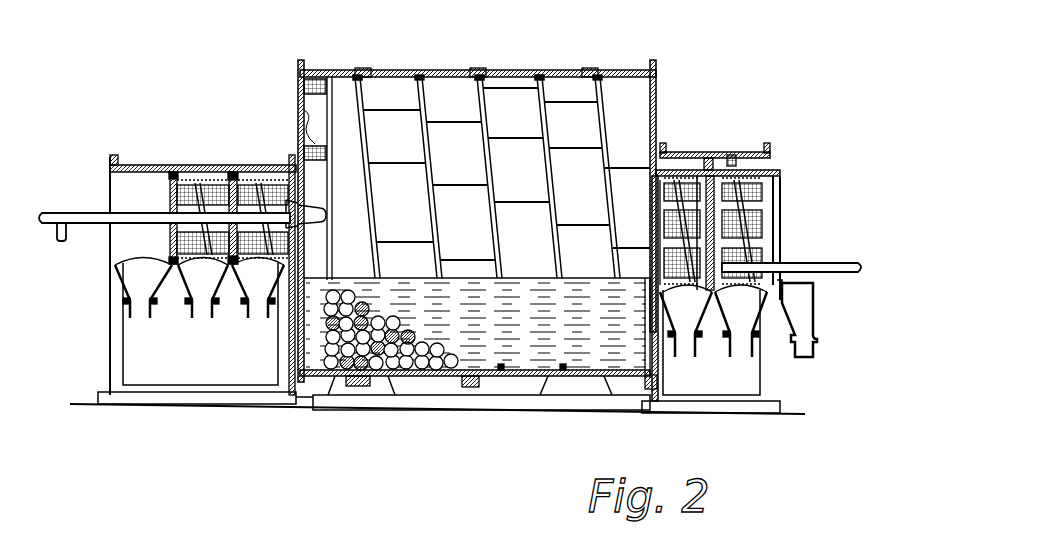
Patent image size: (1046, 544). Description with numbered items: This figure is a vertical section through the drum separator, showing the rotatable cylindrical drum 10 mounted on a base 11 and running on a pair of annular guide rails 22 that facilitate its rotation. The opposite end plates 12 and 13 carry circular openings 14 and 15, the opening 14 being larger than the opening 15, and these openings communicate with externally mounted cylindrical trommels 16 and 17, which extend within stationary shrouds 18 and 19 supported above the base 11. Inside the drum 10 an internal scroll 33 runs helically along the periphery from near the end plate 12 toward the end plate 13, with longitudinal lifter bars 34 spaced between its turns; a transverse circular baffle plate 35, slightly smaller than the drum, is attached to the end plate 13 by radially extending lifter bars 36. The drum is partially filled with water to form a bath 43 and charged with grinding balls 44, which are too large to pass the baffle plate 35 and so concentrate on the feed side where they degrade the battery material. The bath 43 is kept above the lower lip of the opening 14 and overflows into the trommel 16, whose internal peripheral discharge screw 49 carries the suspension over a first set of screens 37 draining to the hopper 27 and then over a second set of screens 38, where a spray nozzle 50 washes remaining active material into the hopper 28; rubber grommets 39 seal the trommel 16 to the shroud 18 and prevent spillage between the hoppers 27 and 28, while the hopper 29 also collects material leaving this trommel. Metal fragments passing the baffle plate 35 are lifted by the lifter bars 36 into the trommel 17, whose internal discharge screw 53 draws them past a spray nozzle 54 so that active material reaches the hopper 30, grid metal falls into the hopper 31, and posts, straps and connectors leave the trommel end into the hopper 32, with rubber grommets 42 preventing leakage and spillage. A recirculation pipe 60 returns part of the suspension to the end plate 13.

The rotatable cylindrical drum 10 is at (446, 62).
The base 11 is at (480, 410).
The end plate 12 is at (656, 92).
The end plate 13 is at (302, 86).
The circular opening 14 is at (650, 168).
The circular opening 15 is at (298, 200).
The cylindrical trommel 16 is at (780, 242).
The cylindrical trommel 17 is at (268, 172).
The stationary shroud 18 is at (746, 142).
The stationary shroud 19 is at (152, 155).
The annular guide rail 22 is at (364, 70).
The collecting hopper 27 is at (690, 320).
The collecting hopper 28 is at (740, 320).
The collecting hopper 29 is at (810, 294).
The collecting hopper 30 is at (260, 290).
The collecting hopper 31 is at (203, 292).
The collecting hopper 32 is at (136, 280).
The internal scroll 33 is at (426, 166).
The longitudinal lifter bar 34 is at (504, 93).
The transverse circular baffle plate 35 is at (335, 136).
The radially extending lifter bar 36 is at (303, 122).
The screen 37 is at (696, 156).
The screen 38 is at (762, 192).
The rubber grommet 39 is at (731, 154).
The rubber grommet 42 is at (206, 174).
The bath 43 is at (518, 288).
The grinding ball 44 is at (380, 294).
The internal peripheral discharge screw 49 is at (764, 220).
The spray nozzle 50 is at (850, 270).
The internal discharge screw 53 is at (192, 214).
The spray nozzle 54 is at (88, 232).
The recirculation pipe 60 is at (72, 214).